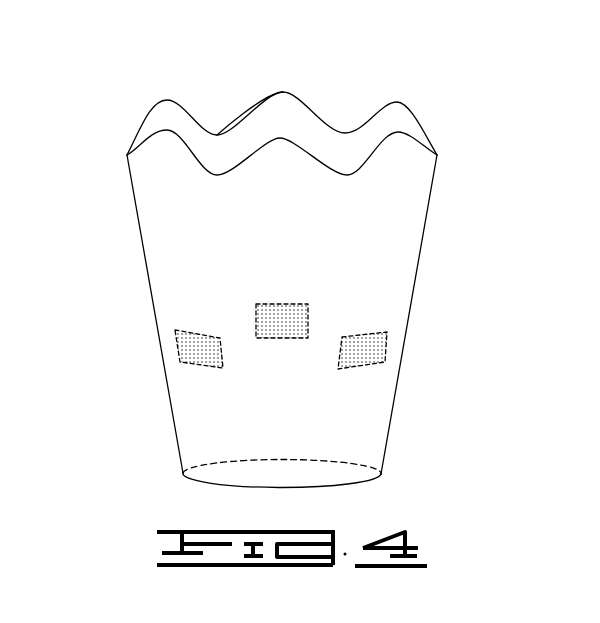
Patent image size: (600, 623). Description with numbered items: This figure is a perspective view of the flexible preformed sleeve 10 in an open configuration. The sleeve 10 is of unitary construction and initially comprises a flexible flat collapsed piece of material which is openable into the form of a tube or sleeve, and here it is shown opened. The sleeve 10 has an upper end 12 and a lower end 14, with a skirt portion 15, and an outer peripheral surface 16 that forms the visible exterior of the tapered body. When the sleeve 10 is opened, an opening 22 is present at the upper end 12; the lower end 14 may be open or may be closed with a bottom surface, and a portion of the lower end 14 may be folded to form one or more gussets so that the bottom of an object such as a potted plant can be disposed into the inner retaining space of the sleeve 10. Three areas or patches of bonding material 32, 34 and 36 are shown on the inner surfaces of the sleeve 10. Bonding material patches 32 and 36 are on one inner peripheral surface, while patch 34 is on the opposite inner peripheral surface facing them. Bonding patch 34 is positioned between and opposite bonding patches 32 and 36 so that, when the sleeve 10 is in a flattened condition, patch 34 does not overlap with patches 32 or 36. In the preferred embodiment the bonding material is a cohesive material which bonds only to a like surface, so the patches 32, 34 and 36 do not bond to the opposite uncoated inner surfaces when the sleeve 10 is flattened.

The flexible preformed sleeve 10 is at (95, 187).
The upper end 12 is at (295, 93).
The lower end 14 is at (343, 485).
The skirt portion 15 is at (417, 117).
The outer peripheral surface 16 is at (332, 242).
The opening 22 is at (218, 158).
The bonding material patch 32 is at (198, 352).
The bonding material patch 34 is at (275, 318).
The bonding material patch 36 is at (367, 352).